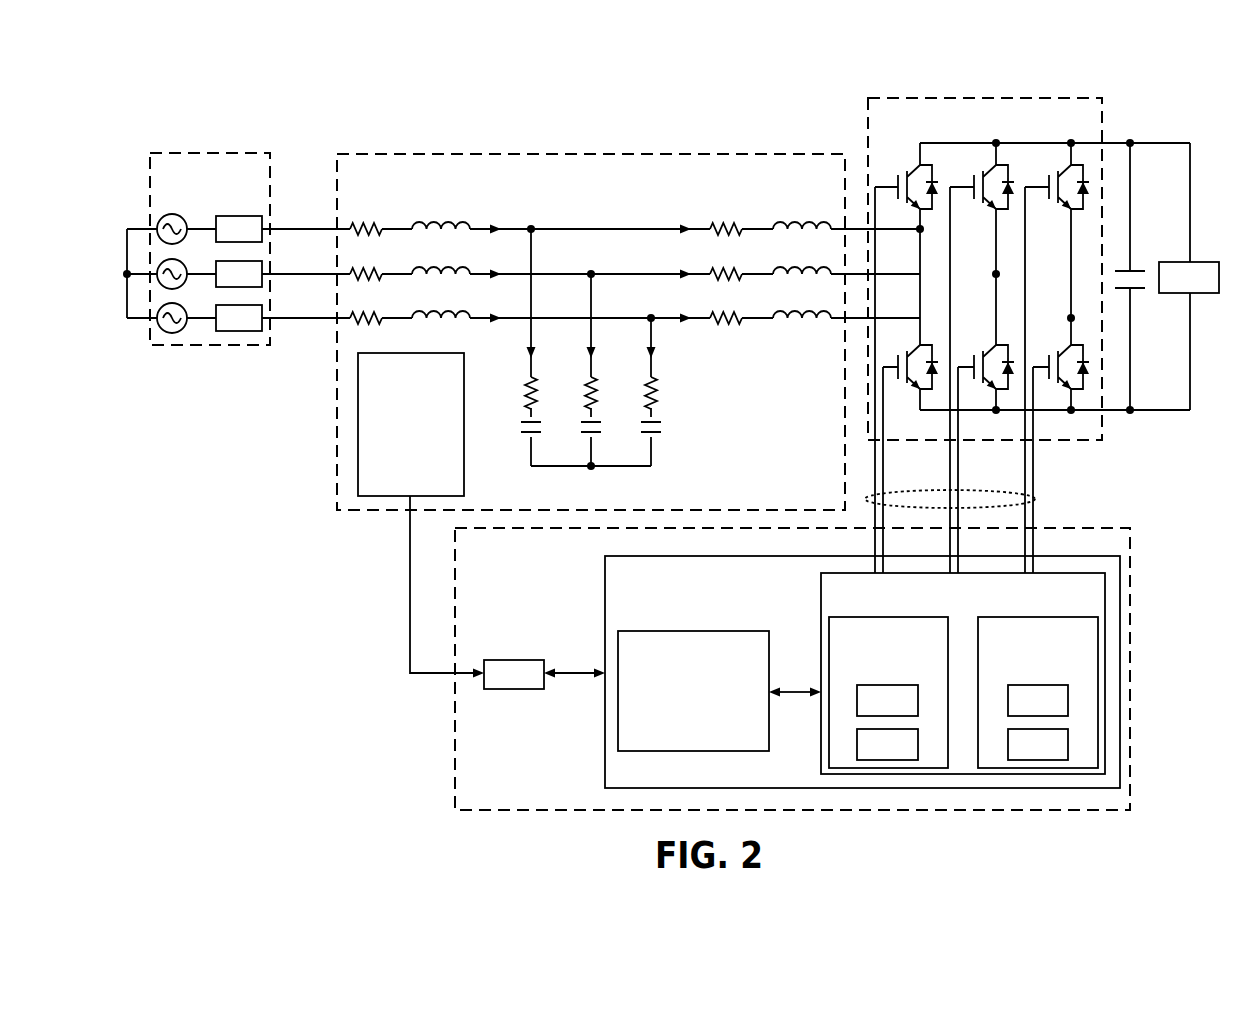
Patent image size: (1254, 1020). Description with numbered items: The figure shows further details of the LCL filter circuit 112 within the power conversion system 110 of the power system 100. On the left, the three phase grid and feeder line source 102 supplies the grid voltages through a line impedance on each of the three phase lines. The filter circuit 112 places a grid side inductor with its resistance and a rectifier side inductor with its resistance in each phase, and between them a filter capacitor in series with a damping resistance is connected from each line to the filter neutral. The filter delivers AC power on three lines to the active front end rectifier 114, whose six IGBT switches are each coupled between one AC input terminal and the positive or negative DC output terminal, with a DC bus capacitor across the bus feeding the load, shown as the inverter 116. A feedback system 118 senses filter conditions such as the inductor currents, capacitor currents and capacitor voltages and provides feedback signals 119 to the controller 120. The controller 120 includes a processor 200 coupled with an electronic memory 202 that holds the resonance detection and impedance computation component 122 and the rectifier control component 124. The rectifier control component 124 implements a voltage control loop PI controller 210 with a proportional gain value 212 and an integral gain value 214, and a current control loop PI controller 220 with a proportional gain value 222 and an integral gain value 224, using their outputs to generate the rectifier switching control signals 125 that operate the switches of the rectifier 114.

The power system 100 is at (203, 110).
The three phase AC power source 102 is at (209, 153).
The power conversion system 110 is at (335, 124).
The filter circuit 112 is at (584, 154).
The rectifier 114 is at (868, 112).
The inverter 116 is at (1198, 262).
The feedback system 118 is at (410, 353).
The feedback signals 119 is at (410, 585).
The controller 120 is at (455, 529).
The resonance detection and impedance computation component 122 is at (687, 631).
The rectifier control component 124 is at (821, 595).
The rectifier switching control signals 125 is at (1037, 500).
The processor 200 is at (514, 660).
The electronic memory 202 is at (605, 576).
The voltage control loop PI controller 210 is at (829, 634).
The proportional gain value 212 is at (857, 703).
The integral gain value 214 is at (857, 741).
The current control loop PI controller 220 is at (1040, 617).
The proportional gain value 222 is at (1068, 702).
The integral gain value 224 is at (1068, 745).